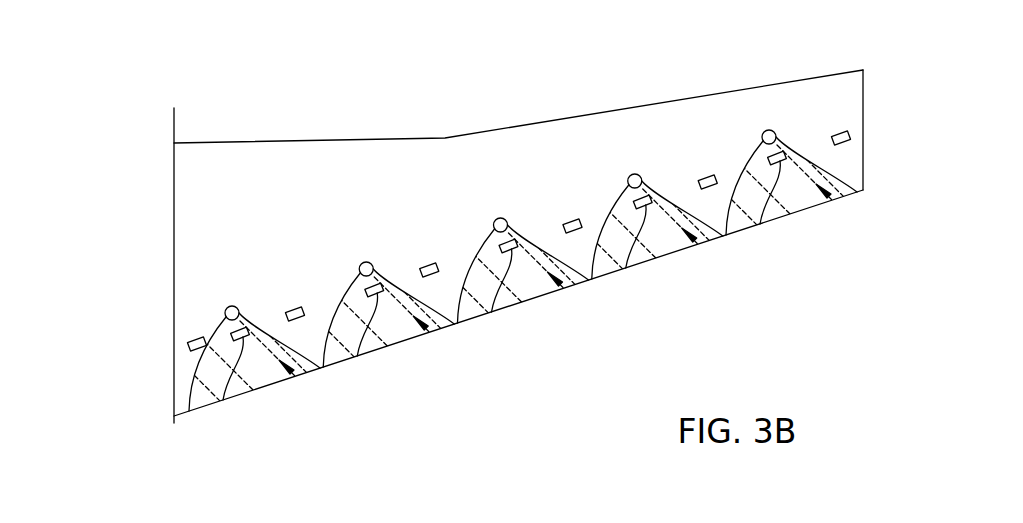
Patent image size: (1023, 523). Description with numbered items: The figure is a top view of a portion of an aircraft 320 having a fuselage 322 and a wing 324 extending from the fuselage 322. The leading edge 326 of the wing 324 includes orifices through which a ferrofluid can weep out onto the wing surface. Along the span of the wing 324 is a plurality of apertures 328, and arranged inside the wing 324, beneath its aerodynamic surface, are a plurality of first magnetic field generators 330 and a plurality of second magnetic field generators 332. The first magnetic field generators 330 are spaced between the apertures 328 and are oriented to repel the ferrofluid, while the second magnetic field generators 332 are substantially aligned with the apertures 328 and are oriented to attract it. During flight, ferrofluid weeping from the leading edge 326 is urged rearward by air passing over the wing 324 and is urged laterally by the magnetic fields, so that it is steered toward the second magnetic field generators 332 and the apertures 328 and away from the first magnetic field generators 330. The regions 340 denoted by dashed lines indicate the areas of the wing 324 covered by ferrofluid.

The aircraft 320 is at (872, 128).
The fuselage 322 is at (176, 191).
The wing 324 is at (342, 139).
The leading edge 326 is at (451, 326).
The apertures 328 is at (513, 259).
The first magnetic field generators 330 is at (519, 220).
The second magnetic field generators 332 is at (504, 294).
The regions 340 is at (567, 314).